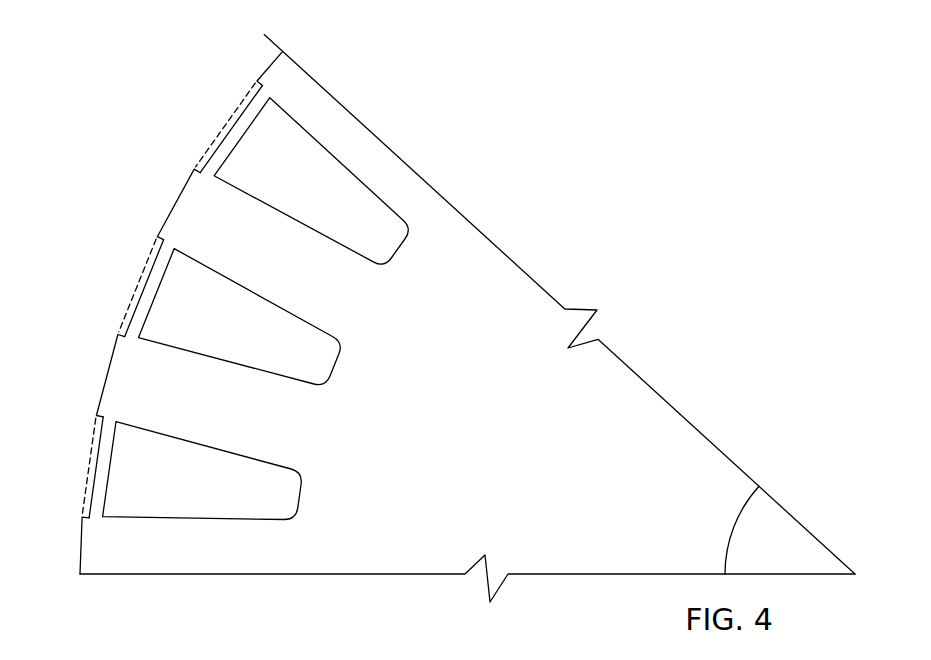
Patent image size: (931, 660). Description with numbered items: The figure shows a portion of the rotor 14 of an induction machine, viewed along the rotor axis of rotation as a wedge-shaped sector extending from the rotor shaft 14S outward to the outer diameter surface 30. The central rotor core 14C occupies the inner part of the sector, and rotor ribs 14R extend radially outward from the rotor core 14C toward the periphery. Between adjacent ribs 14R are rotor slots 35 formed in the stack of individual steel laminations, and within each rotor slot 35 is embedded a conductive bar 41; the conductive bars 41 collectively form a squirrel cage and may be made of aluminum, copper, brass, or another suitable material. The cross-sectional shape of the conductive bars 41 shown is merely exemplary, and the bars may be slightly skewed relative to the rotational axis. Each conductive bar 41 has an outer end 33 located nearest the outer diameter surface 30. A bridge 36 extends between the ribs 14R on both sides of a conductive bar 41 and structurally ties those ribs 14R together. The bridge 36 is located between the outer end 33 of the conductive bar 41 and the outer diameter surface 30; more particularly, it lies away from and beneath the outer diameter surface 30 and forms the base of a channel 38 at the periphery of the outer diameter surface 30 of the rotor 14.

The rotor 14 is at (606, 251).
The rotor core 14C is at (450, 434).
The rotor rib 14R is at (333, 148).
The rotor shaft 14S is at (756, 554).
The outer diameter surface 30 is at (270, 64).
The outer end 33 is at (145, 338).
The rotor slot 35 is at (259, 214).
The bridge 36 is at (261, 98).
The channel 38 is at (231, 118).
The conductive bar 41 is at (295, 188).